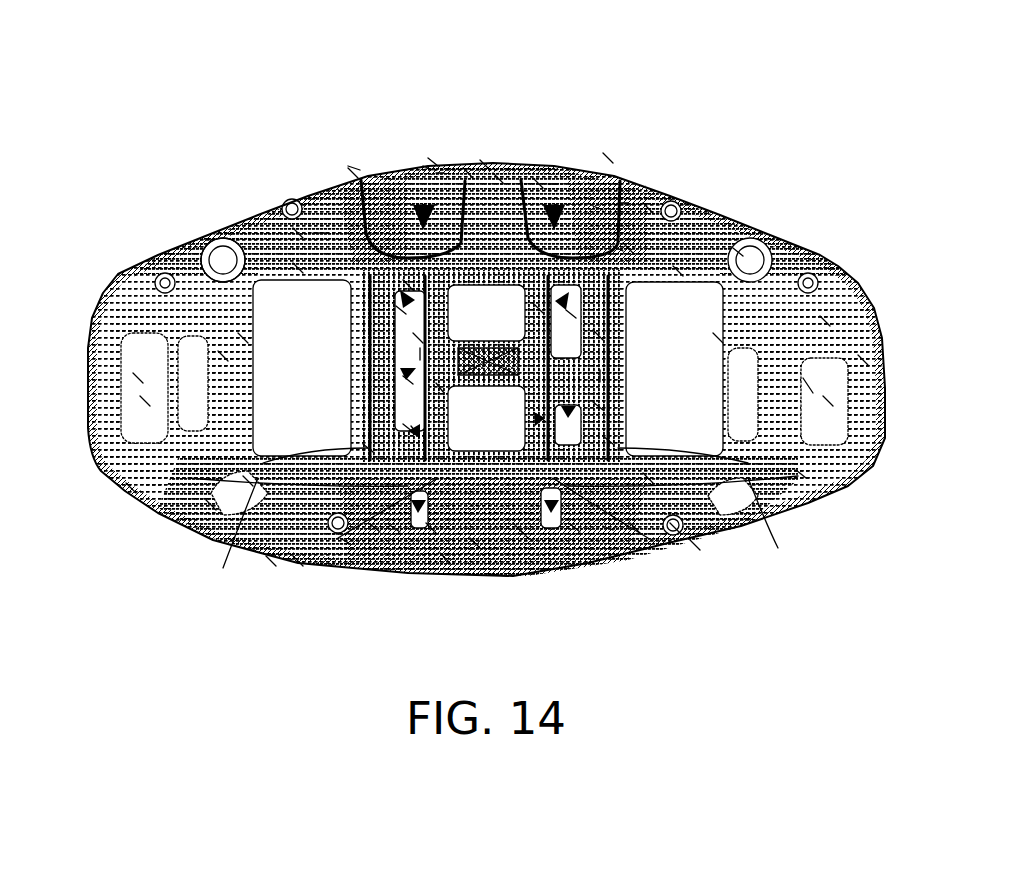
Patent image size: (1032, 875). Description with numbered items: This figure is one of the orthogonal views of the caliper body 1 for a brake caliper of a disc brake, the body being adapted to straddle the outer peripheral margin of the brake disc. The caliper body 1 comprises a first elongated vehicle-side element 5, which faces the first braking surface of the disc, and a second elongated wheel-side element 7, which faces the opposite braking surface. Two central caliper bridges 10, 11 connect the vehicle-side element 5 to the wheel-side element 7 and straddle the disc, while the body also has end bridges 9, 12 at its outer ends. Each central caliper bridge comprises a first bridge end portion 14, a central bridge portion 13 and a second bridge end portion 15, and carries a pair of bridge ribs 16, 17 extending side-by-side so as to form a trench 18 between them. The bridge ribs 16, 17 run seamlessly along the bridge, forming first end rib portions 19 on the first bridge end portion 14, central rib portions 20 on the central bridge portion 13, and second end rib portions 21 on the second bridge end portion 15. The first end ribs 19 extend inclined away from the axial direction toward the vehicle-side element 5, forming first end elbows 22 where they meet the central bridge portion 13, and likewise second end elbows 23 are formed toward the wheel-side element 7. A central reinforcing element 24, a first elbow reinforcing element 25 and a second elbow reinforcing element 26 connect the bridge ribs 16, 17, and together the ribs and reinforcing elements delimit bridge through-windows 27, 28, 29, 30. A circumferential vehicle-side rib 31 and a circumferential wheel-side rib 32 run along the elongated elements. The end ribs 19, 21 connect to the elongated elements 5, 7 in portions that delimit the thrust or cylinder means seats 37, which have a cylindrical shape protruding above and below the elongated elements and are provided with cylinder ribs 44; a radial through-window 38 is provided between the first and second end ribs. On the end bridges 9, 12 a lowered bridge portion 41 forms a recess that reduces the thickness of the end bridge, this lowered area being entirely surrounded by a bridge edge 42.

The caliper body 1 is at (786, 160).
The first elongated vehicle-side element 5 is at (547, 174).
The second elongated wheel-side element 7 is at (490, 570).
The end bridge 9 is at (800, 380).
The central caliper bridge 10 is at (607, 240).
The central caliper bridge 11 is at (313, 228).
The end bridge 12 is at (190, 297).
The central bridge portion 13 is at (412, 345).
The first bridge end portion 14 is at (433, 165).
The second bridge end portion 15 is at (337, 533).
The bridge rib 16 is at (430, 380).
The bridge rib 17 is at (410, 330).
The trench 18 is at (400, 420).
The first end rib portions 19 is at (420, 160).
The central rib portions 20 is at (400, 372).
The second end rib portions 21 is at (385, 520).
The first end elbows 22 is at (400, 277).
The second end elbows 23 is at (360, 440).
The central reinforcing element 24 is at (235, 330).
The first elbow reinforcing element 25 is at (346, 160).
The second elbow reinforcing element 26 is at (240, 473).
The bridge through-window 27 is at (405, 162).
The bridge through-window 28 is at (393, 303).
The bridge through-window 29 is at (537, 410).
The bridge through-window 30 is at (367, 520).
The circumferential vehicle-side rib 31 is at (290, 260).
The circumferential wheel-side rib 32 is at (620, 240).
The thrust or cylinder means seat 37 is at (345, 165).
The radial through-window 38 is at (427, 153).
The lowered bridge portion 41 is at (818, 313).
The bridge edge 42 is at (205, 372).
The cylinder ribs 44 is at (290, 225).